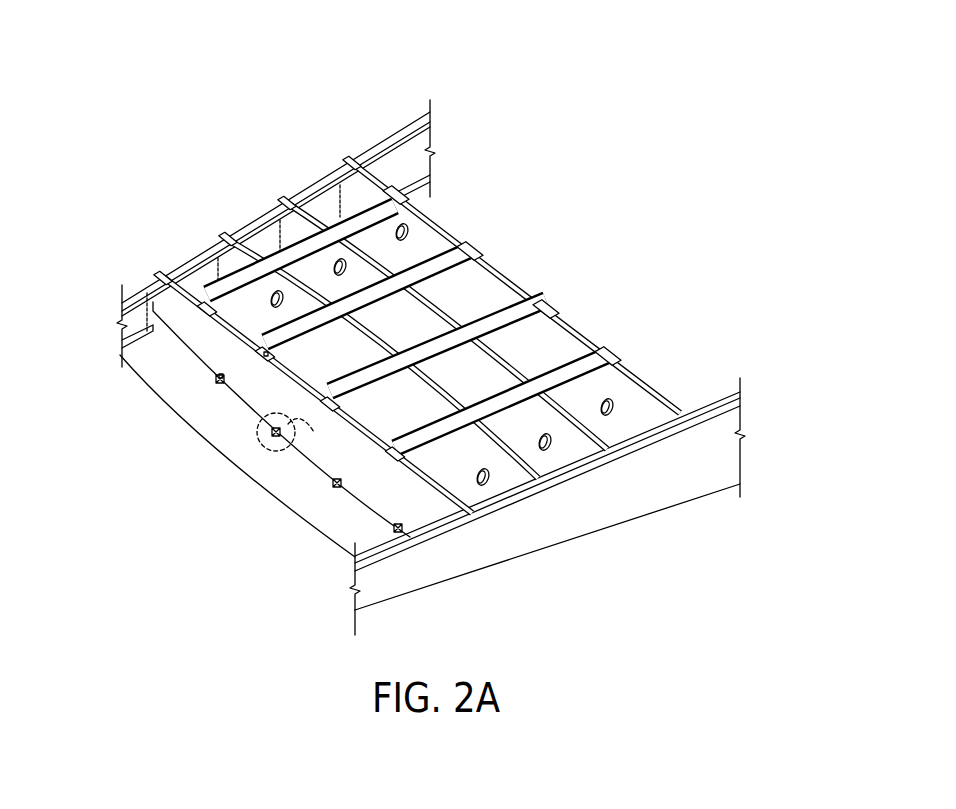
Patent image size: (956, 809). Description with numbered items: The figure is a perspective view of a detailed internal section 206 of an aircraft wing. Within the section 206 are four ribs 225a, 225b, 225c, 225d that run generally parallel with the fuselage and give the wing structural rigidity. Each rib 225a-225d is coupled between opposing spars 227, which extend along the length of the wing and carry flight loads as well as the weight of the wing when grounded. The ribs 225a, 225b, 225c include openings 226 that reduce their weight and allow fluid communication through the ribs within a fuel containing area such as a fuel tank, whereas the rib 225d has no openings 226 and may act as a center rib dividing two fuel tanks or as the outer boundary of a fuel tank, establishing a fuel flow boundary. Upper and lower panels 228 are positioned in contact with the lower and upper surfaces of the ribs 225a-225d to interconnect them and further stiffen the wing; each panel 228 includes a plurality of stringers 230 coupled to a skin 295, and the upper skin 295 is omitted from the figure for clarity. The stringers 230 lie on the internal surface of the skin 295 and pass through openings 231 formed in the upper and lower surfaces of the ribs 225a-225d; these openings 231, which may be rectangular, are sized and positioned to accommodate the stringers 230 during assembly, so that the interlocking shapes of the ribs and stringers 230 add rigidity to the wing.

The section of the wing 206 is at (449, 344).
The rib 225a is at (600, 387).
The rib 225b is at (580, 452).
The rib 225c is at (505, 477).
The rib 225d is at (415, 507).
The opening 226 is at (270, 297).
The spar 227 is at (393, 132).
The upper and lower panels 228 is at (330, 548).
The stringer 230 is at (363, 213).
The opening 231 is at (220, 379).
The skin 295 is at (232, 430).